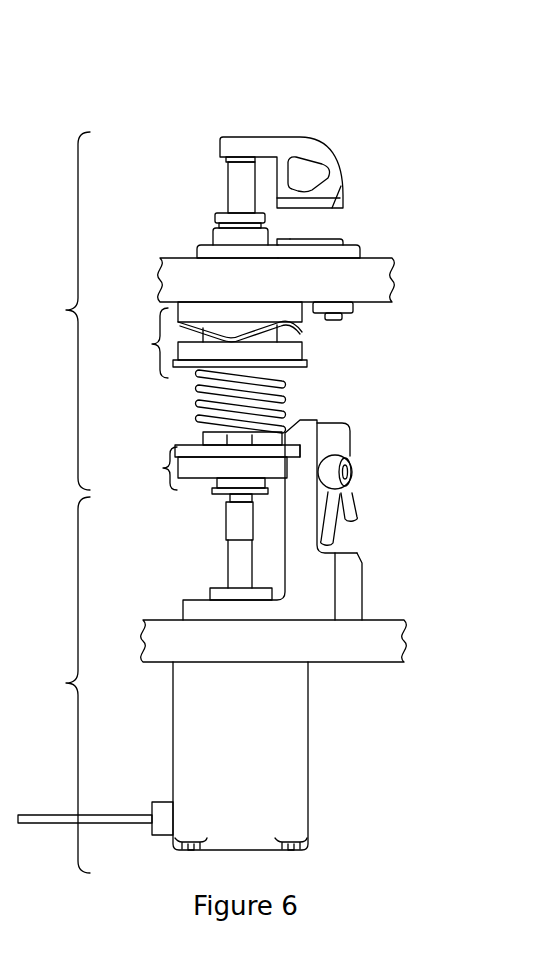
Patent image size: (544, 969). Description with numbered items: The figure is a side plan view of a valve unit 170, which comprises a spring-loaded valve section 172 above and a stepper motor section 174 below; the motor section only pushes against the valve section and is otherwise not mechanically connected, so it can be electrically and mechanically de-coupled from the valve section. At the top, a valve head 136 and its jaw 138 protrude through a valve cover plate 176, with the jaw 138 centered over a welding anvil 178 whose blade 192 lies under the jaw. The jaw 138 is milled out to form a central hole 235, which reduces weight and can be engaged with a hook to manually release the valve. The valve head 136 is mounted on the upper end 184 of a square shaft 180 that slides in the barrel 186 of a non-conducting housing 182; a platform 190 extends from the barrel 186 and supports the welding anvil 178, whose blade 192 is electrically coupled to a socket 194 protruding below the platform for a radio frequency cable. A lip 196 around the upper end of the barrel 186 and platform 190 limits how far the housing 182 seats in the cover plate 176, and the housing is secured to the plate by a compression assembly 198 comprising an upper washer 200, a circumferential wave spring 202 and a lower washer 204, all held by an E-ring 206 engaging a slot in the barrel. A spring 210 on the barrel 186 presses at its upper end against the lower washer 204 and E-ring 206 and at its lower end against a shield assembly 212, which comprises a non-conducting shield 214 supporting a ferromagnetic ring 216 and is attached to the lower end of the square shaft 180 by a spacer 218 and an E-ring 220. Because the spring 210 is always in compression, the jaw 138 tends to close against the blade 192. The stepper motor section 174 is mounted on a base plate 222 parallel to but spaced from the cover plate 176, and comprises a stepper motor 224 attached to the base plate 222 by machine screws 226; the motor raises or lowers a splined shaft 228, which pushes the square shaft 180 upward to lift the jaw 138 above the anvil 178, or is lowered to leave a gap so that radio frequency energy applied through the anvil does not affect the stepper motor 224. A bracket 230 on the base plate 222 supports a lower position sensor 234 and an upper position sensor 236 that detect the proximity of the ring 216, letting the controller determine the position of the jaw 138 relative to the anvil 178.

The valve unit 170 is at (380, 135).
The valve head 136 is at (247, 135).
The central hole 235 is at (303, 167).
The jaw 138 is at (340, 193).
The upper end 184 is at (228, 162).
The square shaft 180 is at (227, 183).
The lip 196 is at (212, 242).
The non-conducting housing 182 is at (197, 253).
The platform 190 is at (357, 250).
The welding anvil 178 is at (343, 239).
The blade 192 is at (320, 238).
The valve cover plate 176 is at (395, 285).
The socket 194 is at (353, 318).
The compression assembly 198 is at (198, 340).
The upper washer 200 is at (304, 312).
The circumferential wave spring 202 is at (300, 330).
The lower washer 204 is at (308, 355).
The E-ring 206 is at (297, 372).
The barrel 186 is at (205, 397).
The spring 210 is at (200, 413).
The ferromagnetic ring 216 is at (190, 445).
The non-conducting shield 214 is at (198, 478).
The shield assembly 212 is at (185, 468).
The spacer 218 is at (213, 493).
The E-ring 220 is at (218, 502).
The splined shaft 228 is at (228, 582).
The bracket 230 is at (358, 560).
The upper position sensor 236 is at (352, 440).
The lower position sensor 234 is at (348, 475).
The base plate 222 is at (372, 620).
The stepper motor 224 is at (312, 748).
The machine screws 226 is at (175, 845).
The spring-loaded valve section 172 is at (64, 310).
The stepper motor section 174 is at (64, 683).